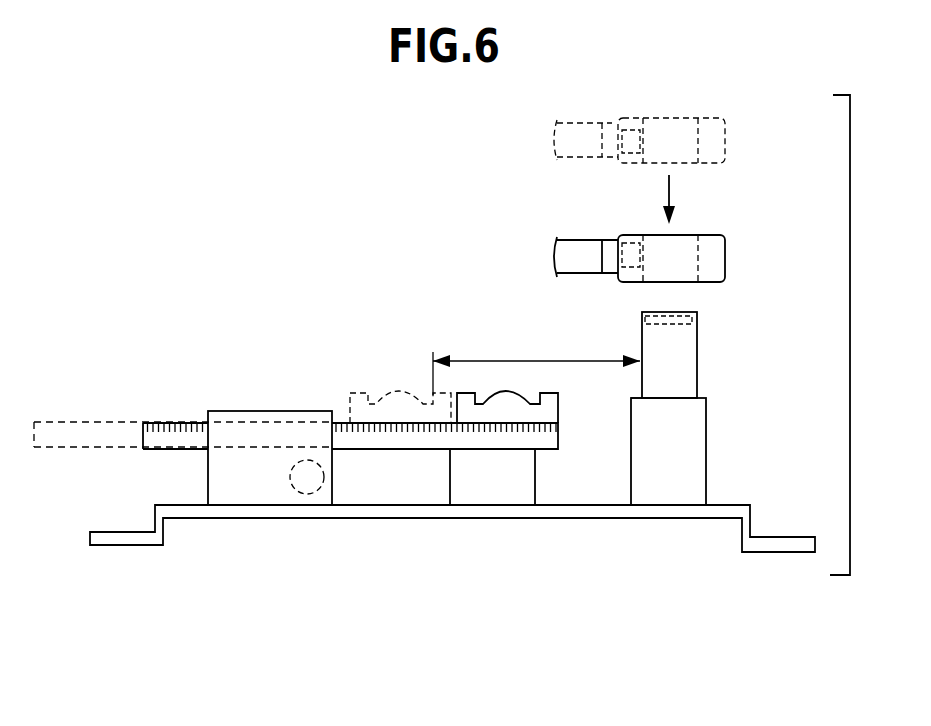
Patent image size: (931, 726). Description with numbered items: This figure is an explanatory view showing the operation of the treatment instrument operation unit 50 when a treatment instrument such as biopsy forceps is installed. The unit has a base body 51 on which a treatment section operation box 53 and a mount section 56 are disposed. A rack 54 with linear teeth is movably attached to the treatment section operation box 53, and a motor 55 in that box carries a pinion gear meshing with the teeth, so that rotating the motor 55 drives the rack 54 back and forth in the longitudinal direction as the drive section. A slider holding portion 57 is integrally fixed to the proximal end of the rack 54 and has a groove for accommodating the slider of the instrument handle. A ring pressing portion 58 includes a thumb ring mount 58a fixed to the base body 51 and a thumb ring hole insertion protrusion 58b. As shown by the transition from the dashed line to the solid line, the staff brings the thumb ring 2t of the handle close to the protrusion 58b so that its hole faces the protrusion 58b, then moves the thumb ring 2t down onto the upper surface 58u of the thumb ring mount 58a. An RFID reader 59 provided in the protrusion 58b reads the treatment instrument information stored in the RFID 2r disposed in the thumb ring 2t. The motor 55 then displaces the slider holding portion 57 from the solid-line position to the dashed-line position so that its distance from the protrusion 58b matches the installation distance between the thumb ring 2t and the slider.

The treatment instrument operation unit 50 is at (324, 324).
The base body 51 is at (398, 520).
The treatment section operation box 53 is at (257, 482).
The rack 54 is at (190, 422).
The motor 55 is at (318, 491).
The mount section 56 is at (491, 488).
The slider holding portion 57 is at (402, 393).
The ring pressing portion 58 is at (697, 396).
The thumb ring mount 58a is at (706, 433).
The thumb ring hole insertion protrusion 58b is at (697, 355).
The upper surface 58u is at (633, 398).
The RFID reader 59 is at (723, 306).
The thumb ring 2t is at (678, 200).
The RFID 2r is at (637, 233).